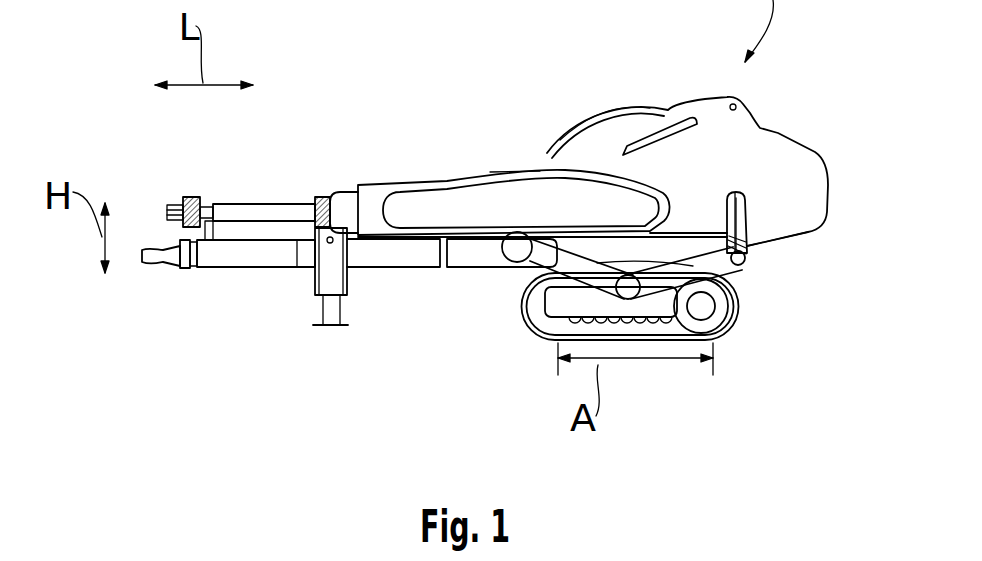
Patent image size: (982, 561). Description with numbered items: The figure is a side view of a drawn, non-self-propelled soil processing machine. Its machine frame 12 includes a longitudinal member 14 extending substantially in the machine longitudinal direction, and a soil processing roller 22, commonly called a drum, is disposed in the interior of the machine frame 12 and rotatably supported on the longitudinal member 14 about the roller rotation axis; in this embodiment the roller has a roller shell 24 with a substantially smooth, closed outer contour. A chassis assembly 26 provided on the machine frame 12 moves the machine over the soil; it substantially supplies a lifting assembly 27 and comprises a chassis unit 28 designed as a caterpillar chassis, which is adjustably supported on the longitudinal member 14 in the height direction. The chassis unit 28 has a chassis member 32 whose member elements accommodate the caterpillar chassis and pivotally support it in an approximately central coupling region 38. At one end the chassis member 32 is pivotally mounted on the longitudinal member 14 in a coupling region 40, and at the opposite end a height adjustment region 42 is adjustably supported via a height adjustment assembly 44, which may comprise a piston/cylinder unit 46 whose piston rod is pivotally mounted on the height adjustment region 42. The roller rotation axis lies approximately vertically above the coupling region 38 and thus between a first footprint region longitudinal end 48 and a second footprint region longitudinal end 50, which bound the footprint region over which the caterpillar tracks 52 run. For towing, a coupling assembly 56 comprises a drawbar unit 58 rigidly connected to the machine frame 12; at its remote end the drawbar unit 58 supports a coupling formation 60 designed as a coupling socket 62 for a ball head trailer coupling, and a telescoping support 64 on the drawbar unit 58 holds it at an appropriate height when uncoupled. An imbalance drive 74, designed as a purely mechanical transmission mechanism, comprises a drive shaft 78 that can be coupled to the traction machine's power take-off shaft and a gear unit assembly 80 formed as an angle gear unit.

The machine frame 12 is at (777, 128).
The longitudinal member 14 is at (790, 218).
The soil processing roller 22 is at (575, 140).
The roller shell 24 is at (632, 107).
The chassis assembly 26 is at (683, 385).
The lifting assembly 27 is at (767, 342).
The chassis unit 28 is at (477, 317).
The chassis member 32 is at (537, 268).
The coupling region 38 is at (630, 290).
The coupling region 40 is at (517, 245).
The height adjustment region 42 is at (743, 267).
The height adjustment assembly 44 is at (753, 218).
The piston/cylinder unit 46 is at (748, 200).
The first footprint region longitudinal end 48 is at (553, 370).
The second footprint region longitudinal end 50 is at (715, 370).
The caterpillar track 52 is at (525, 322).
The coupling assembly 56 is at (303, 148).
The drawbar unit 58 is at (240, 268).
The coupling formation 60 is at (137, 236).
The coupling socket 62 is at (140, 262).
The support 64 is at (313, 288).
The imbalance drive 74 is at (490, 170).
The drive shaft 78 is at (263, 203).
The gear unit assembly 80 is at (367, 185).